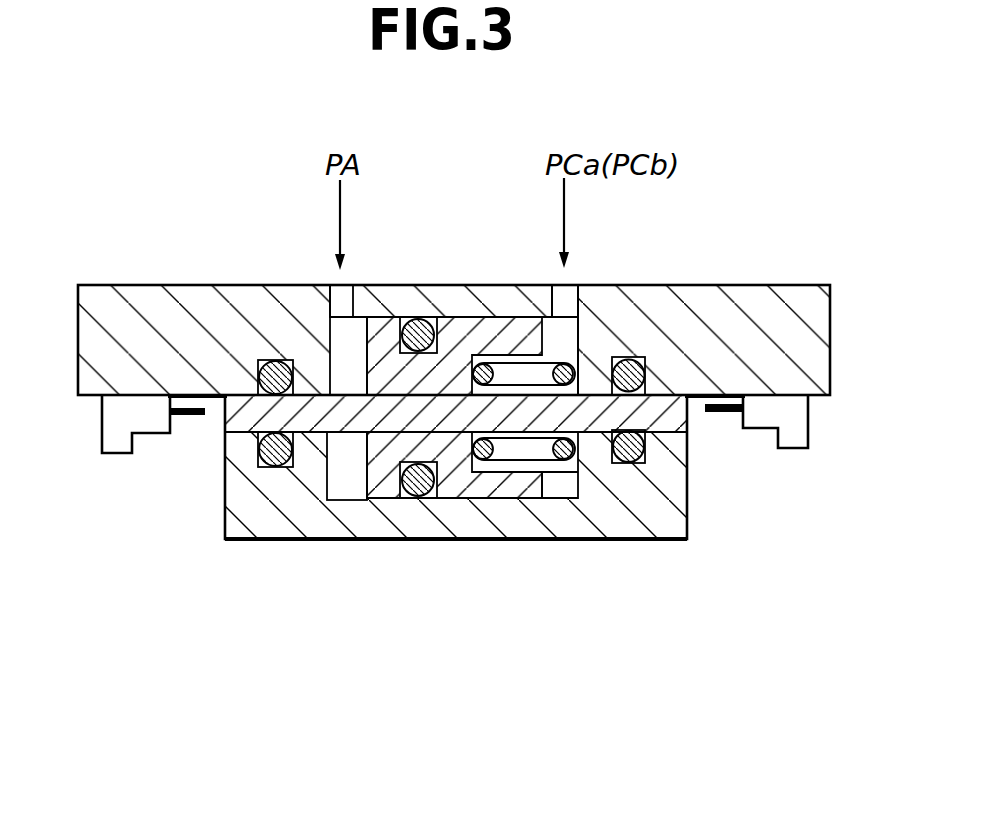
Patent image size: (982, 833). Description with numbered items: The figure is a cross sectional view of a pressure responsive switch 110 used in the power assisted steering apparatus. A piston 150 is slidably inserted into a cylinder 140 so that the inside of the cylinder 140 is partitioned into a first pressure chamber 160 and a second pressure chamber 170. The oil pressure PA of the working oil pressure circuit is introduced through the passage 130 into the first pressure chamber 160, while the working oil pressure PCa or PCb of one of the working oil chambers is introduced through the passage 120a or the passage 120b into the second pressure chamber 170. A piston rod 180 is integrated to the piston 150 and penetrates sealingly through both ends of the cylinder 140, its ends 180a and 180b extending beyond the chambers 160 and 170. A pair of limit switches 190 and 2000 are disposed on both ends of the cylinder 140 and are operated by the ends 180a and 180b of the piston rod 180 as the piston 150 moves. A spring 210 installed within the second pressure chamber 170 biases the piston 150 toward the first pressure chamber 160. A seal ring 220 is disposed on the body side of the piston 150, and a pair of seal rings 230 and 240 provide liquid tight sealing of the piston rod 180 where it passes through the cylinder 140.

The pressure responsive switch 110 is at (155, 270).
The passage 120a is at (566, 300).
The passage 120b is at (565, 301).
The passage 130 is at (344, 303).
The cylinder 140 is at (472, 530).
The piston 150 is at (512, 490).
The first pressure chamber 160 is at (347, 487).
The second pressure chamber 170 is at (555, 487).
The piston rod 180 is at (308, 417).
The end of piston rod 180a is at (222, 410).
The end of piston rod 180b is at (690, 418).
The limit switch 190 is at (148, 425).
The spring 210 is at (482, 366).
The seal ring 220 is at (418, 487).
The seal ring 230 is at (278, 368).
The seal ring 240 is at (632, 368).
The limit switch 2000 is at (763, 420).